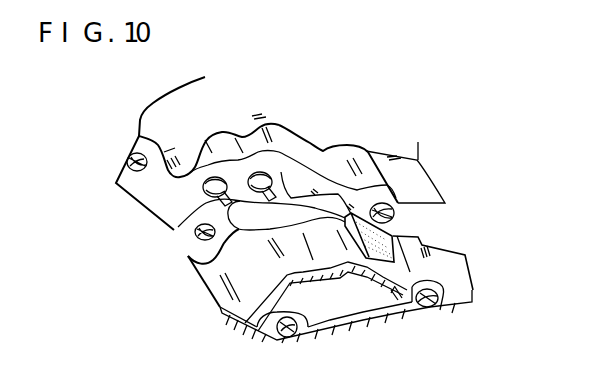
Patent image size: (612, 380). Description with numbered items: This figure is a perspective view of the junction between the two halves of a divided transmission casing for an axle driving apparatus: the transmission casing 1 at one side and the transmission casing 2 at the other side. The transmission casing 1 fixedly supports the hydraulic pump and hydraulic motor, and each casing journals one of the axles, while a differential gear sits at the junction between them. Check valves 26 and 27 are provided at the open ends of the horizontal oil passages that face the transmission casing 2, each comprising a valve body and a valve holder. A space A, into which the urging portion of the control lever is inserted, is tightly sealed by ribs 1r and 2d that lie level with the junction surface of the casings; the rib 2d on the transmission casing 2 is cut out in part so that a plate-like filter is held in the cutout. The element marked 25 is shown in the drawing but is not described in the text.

The transmission casing at one side 1 is at (143, 212).
The rib 1r is at (328, 153).
The transmission casing at the other side 2 is at (258, 330).
The rib 2d is at (464, 262).
The screw 25 is at (398, 206).
The check valve 26 is at (178, 227).
The check valve 27 is at (266, 176).
The space A is at (347, 304).